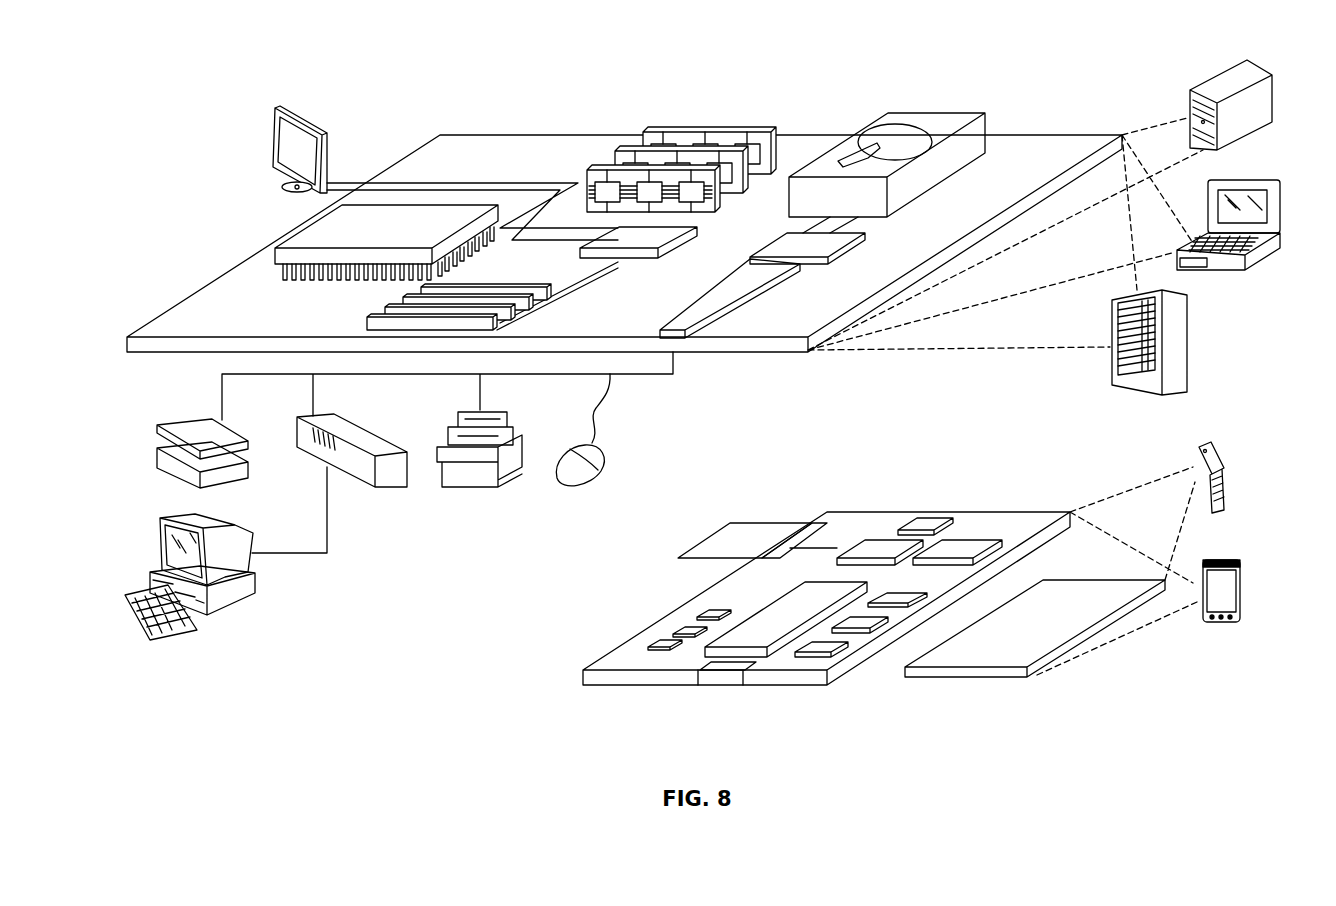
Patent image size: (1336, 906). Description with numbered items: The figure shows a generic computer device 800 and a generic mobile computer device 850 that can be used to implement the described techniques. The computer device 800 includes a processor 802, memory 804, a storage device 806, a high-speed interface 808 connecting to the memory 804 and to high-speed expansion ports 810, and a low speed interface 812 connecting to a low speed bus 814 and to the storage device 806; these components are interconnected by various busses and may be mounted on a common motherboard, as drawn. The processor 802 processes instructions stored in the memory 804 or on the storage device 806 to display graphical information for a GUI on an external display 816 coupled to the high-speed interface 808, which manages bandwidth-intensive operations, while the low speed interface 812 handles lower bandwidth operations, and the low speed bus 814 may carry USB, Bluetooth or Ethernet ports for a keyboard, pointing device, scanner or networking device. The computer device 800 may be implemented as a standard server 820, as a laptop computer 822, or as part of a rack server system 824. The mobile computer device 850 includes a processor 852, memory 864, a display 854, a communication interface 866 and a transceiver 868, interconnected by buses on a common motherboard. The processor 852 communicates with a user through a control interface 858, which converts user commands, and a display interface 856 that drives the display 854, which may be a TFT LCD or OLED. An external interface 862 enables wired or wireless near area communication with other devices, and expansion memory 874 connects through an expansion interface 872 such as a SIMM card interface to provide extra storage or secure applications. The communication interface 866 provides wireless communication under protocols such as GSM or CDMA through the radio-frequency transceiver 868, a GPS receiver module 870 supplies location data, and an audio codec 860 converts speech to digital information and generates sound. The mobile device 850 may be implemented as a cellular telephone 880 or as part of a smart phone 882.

The computer device 800 is at (396, 86).
The processor 802 is at (302, 235).
The memory 804 is at (712, 128).
The storage device 806 is at (927, 115).
The high-speed interface 808 is at (652, 237).
The high-speed expansion ports 810 is at (392, 302).
The low speed interface 812 is at (785, 238).
The low speed bus 814 is at (678, 322).
The display 816 is at (278, 108).
The standard server 820 is at (1207, 88).
The laptop computer 822 is at (1260, 178).
The rack server system 824 is at (1188, 345).
The mobile computer device 850 is at (543, 693).
The processor 852 is at (757, 623).
The display 854 is at (1071, 581).
The display interface 856 is at (830, 643).
The control interface 858 is at (867, 622).
The audio codec 860 is at (898, 593).
The external interface 862 is at (722, 672).
The memory 864 is at (678, 627).
The communication interface 866 is at (878, 542).
The transceiver 868 is at (967, 543).
The GPS receiver module 870 is at (927, 522).
The expansion interface 872 is at (808, 523).
The expansion memory 874 is at (734, 523).
The cellular telephone 880 is at (1197, 445).
The smart phone 882 is at (1228, 560).